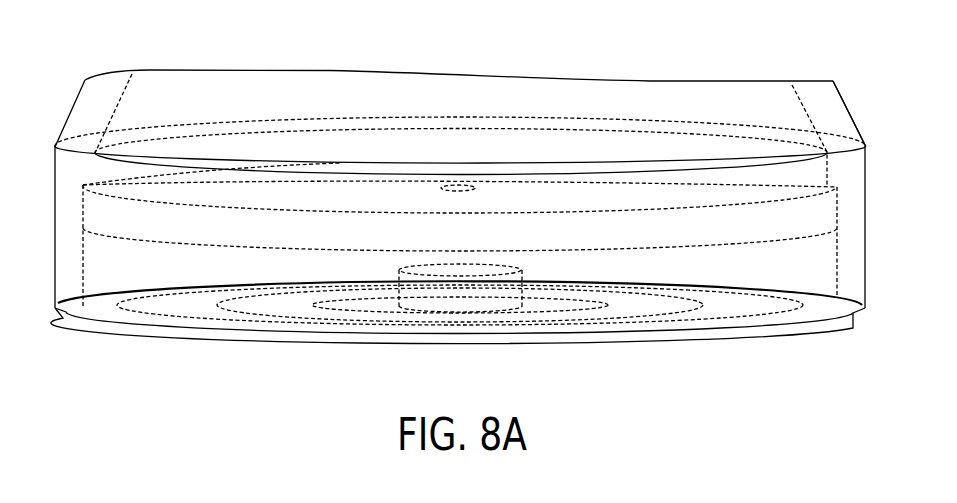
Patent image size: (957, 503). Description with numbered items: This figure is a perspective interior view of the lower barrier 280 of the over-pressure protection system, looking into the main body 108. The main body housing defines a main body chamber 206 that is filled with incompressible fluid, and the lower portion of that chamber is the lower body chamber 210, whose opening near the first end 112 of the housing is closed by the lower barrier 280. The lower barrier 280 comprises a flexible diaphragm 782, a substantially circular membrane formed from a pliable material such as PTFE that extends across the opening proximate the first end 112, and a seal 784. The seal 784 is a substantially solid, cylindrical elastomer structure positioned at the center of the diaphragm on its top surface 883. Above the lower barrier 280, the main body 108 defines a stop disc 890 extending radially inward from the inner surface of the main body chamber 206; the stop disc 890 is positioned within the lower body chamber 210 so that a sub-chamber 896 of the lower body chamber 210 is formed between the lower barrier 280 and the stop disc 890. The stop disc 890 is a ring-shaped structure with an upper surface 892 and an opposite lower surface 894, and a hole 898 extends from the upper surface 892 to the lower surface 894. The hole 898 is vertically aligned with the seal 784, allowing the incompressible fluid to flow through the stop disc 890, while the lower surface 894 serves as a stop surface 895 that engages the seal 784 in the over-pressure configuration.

The main body 108 is at (832, 102).
The first end 112 is at (856, 313).
The main body chamber 206 is at (203, 88).
The lower body chamber 210 is at (745, 85).
The lower barrier 280 is at (703, 308).
The flexible diaphragm 782 is at (274, 318).
The seal 784 is at (448, 307).
The top surface 883 is at (345, 312).
The stop disc 890 is at (798, 191).
The upper surface 892 is at (153, 188).
The lower surface 894 is at (93, 250).
The stop surface 895 is at (179, 258).
The sub-chamber 896 is at (833, 256).
The hole 898 is at (458, 170).